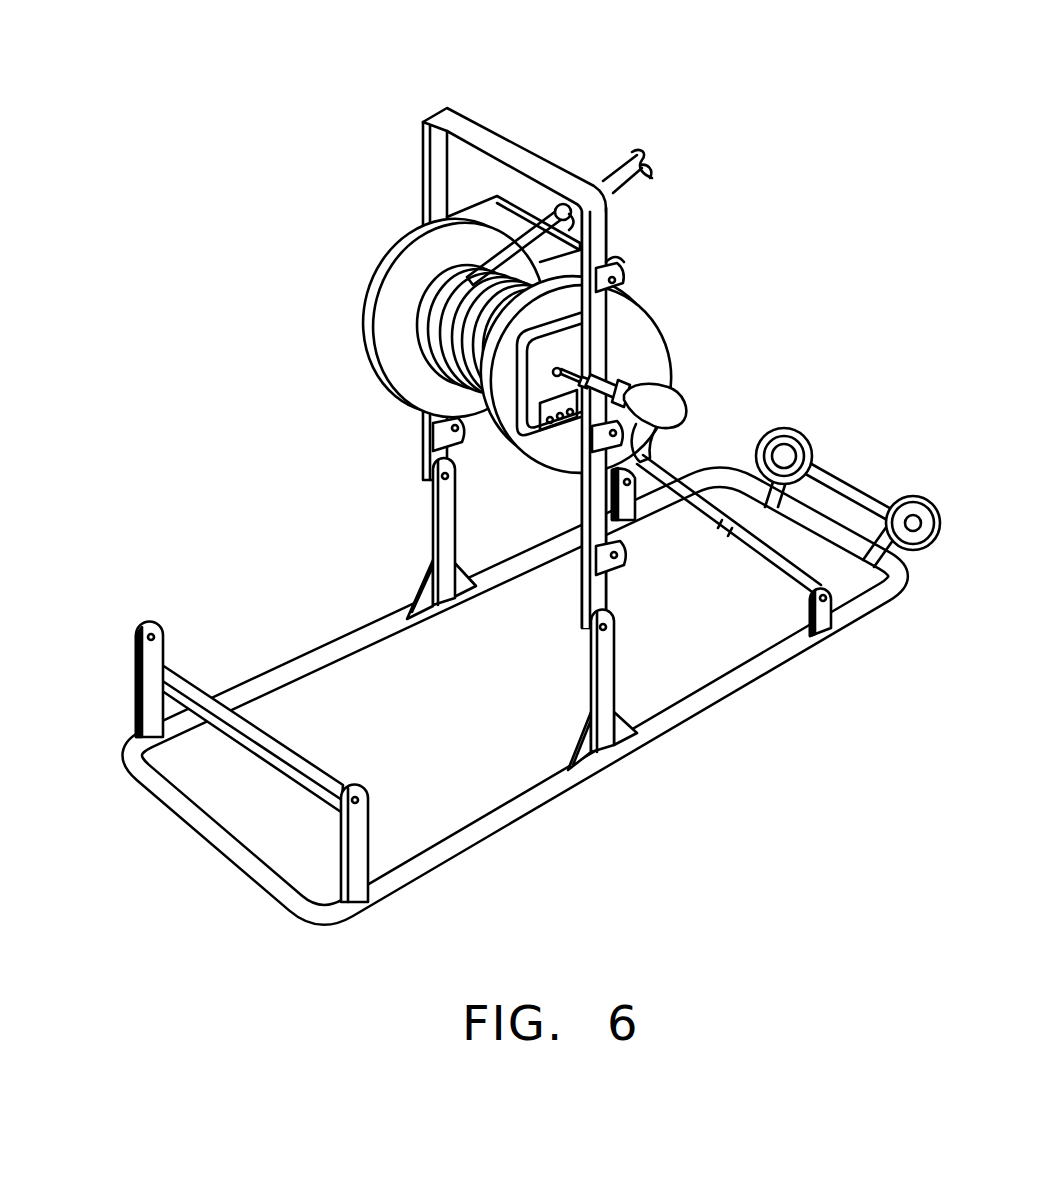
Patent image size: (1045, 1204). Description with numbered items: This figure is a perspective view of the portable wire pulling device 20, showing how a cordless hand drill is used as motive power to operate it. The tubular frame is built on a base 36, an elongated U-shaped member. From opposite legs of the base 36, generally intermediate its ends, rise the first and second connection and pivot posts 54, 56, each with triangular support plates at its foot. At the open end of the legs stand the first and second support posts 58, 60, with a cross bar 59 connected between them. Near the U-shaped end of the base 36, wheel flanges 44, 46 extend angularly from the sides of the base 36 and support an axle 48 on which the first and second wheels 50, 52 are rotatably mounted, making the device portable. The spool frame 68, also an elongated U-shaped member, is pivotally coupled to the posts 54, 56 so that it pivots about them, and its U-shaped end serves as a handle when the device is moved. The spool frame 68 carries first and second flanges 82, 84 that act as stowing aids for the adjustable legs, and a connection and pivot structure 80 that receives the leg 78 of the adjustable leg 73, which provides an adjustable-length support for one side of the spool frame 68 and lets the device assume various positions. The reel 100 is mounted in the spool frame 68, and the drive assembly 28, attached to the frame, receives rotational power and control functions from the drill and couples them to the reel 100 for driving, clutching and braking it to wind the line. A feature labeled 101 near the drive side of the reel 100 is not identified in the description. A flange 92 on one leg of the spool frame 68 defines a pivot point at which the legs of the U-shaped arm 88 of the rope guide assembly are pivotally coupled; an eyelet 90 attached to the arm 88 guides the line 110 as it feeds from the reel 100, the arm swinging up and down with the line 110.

The wire pulling device 20 is at (186, 182).
The drive assembly 28 is at (513, 446).
The base 36 is at (490, 818).
The wheel flange 44 is at (832, 486).
The wheel flange 46 is at (875, 481).
The axle 48 is at (845, 560).
The first wheel 50 is at (784, 428).
The second wheel 52 is at (910, 495).
The first connection and pivot post 54 is at (445, 530).
The second connection and pivot post 56 is at (598, 661).
The first support post 58 is at (147, 697).
The cross bar 59 is at (247, 727).
The second support post 60 is at (358, 845).
The spool frame 68 is at (482, 138).
The adjustable leg 73 is at (703, 527).
The leg 78 is at (684, 420).
The second connection and pivot structure 80 is at (600, 444).
The first flange 82 is at (438, 428).
The second flange 84 is at (614, 561).
The U-shaped arm 88 is at (480, 200).
The eyelet 90 is at (568, 212).
The flange 92 is at (618, 284).
The reel 100 is at (400, 328).
The hub aperture 101 is at (572, 370).
The line 110 is at (615, 180).